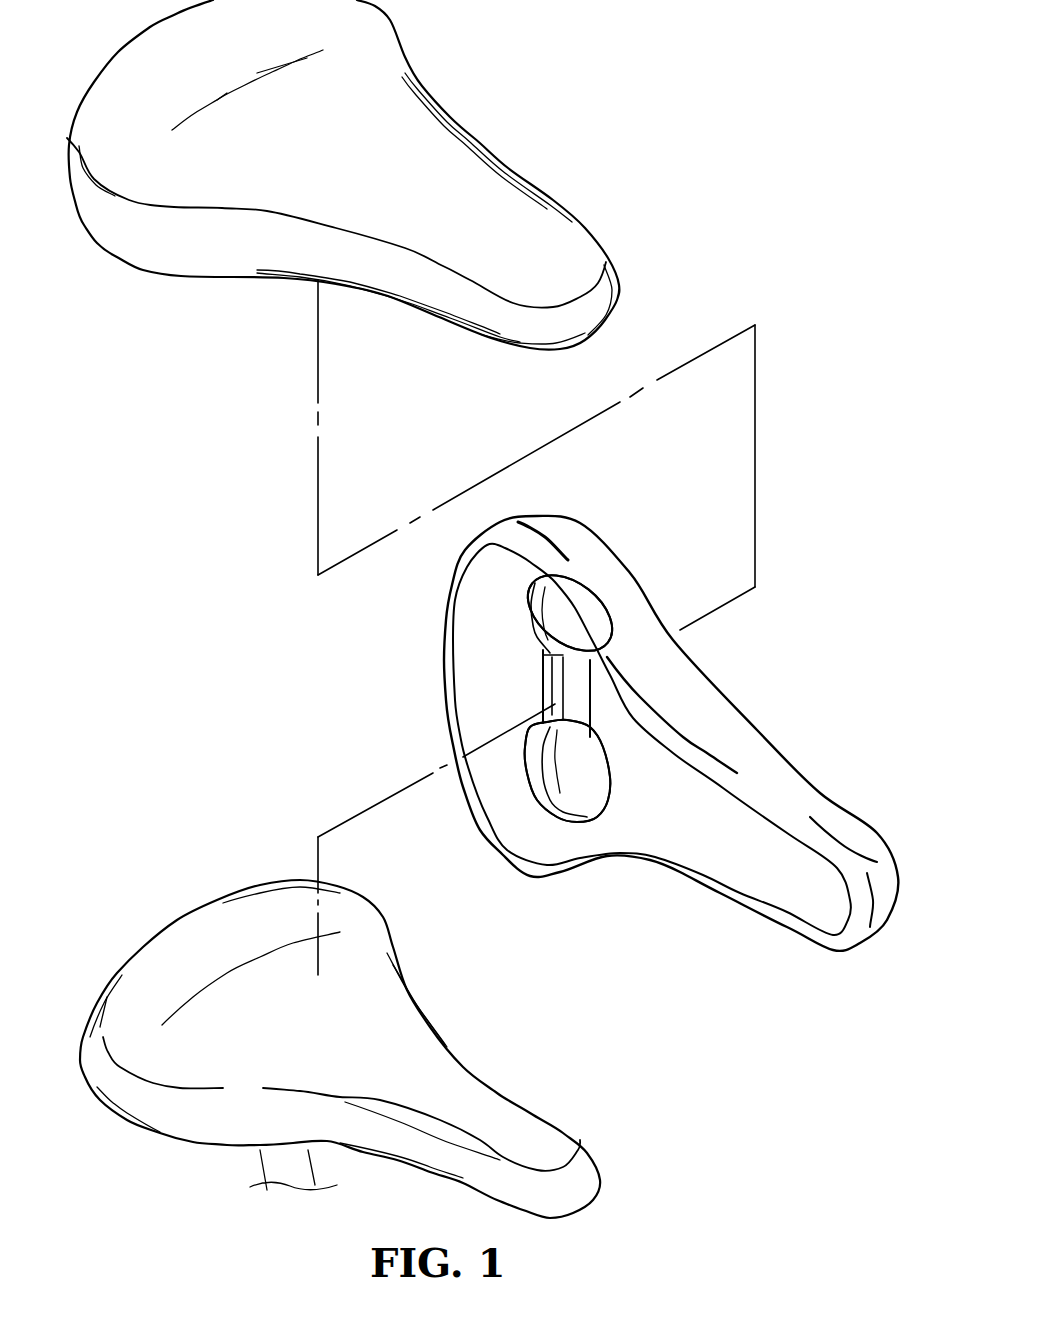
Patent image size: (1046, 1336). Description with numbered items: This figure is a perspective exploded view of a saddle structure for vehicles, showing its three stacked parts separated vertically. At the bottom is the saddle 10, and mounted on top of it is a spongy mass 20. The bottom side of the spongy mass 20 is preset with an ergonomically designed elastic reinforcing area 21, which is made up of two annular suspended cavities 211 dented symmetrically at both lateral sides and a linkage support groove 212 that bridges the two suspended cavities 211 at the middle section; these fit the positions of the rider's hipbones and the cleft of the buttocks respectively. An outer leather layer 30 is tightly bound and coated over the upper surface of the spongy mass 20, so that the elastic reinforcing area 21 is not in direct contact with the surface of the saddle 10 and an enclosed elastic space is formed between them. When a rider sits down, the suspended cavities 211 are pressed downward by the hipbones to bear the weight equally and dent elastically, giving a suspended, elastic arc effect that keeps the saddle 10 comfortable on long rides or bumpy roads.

The saddle 10 is at (187, 875).
The spongy mass 20 is at (407, 648).
The elastic reinforcing area 21 is at (583, 830).
The suspended cavities 211 is at (535, 753).
The linkage support groove 212 is at (556, 698).
The outer leather layer 30 is at (566, 182).